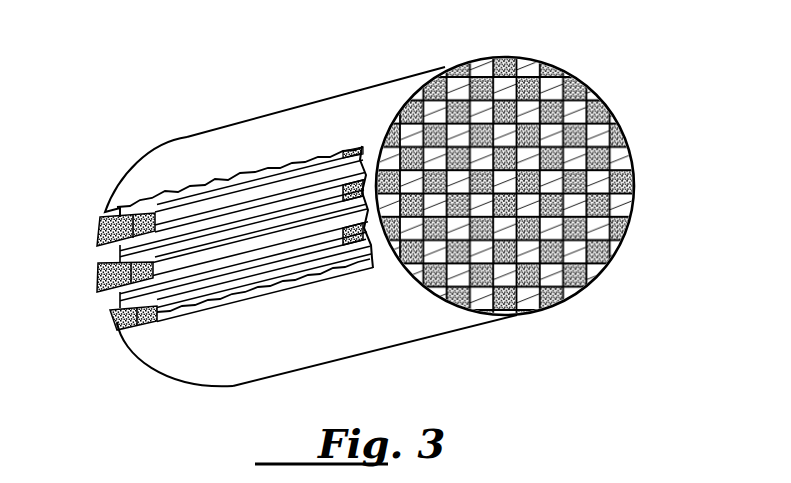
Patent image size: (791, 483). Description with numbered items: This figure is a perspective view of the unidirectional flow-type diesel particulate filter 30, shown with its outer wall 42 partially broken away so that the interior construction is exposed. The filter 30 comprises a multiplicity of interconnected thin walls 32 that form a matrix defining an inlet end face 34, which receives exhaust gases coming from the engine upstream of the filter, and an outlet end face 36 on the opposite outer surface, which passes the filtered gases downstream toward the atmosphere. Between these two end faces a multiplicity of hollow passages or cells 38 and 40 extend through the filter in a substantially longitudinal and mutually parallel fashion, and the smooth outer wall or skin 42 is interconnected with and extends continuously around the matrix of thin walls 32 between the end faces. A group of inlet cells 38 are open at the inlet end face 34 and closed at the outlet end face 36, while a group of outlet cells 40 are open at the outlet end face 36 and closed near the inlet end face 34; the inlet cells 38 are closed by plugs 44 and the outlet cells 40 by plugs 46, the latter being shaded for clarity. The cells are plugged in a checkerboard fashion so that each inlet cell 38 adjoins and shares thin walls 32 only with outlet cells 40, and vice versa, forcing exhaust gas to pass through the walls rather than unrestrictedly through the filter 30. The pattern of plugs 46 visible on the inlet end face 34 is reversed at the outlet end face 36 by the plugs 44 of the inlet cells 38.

The diesel particulate filter 30 is at (462, 340).
The thin walls 32 is at (132, 259).
The inlet end face 34 is at (634, 132).
The outlet end face 36 is at (130, 360).
The inlet cells 38 is at (308, 230).
The outlet cells 40 is at (240, 223).
The outer wall or skin 42 is at (316, 326).
The plugs 44 is at (100, 222).
The plugs 46 is at (458, 62).